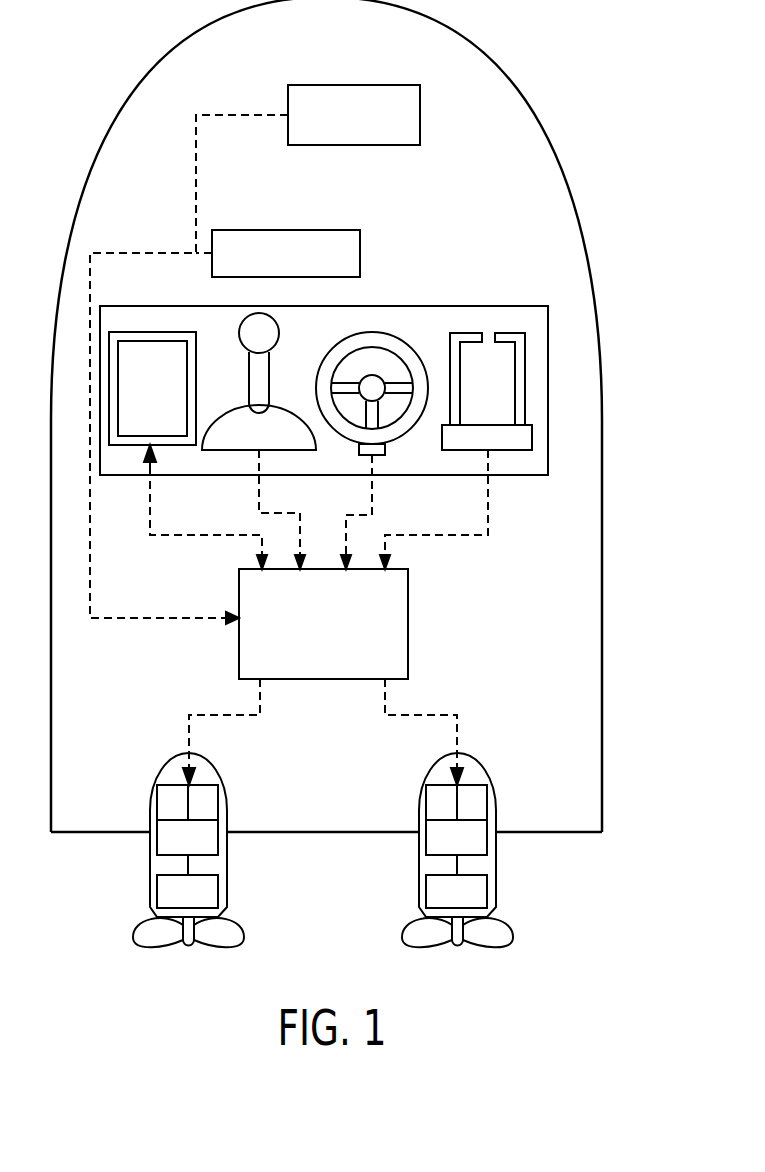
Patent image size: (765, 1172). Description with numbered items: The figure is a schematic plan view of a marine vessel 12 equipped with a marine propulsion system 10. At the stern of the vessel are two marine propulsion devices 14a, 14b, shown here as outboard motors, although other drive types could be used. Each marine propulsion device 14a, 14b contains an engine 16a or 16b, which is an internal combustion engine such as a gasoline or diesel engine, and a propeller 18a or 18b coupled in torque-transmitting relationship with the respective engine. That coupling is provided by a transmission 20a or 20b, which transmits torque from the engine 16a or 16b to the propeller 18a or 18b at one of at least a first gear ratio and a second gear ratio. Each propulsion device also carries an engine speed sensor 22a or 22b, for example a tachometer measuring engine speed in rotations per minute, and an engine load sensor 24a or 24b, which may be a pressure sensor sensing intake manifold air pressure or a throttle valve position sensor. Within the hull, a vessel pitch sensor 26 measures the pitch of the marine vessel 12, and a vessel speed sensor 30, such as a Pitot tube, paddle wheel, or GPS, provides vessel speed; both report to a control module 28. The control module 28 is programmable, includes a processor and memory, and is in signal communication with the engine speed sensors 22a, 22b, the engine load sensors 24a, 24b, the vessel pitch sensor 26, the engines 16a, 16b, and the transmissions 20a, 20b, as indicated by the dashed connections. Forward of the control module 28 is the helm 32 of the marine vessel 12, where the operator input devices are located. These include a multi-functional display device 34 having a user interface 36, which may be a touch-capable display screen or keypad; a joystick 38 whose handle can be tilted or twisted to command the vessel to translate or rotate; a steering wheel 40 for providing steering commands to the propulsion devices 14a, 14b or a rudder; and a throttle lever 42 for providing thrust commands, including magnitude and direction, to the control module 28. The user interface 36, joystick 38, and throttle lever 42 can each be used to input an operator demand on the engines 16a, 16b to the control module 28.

The marine propulsion system 10 is at (430, 586).
The marine vessel 12 is at (530, 128).
The marine propulsion device 14a is at (181, 850).
The marine propulsion device 14b is at (470, 858).
The engine 16a is at (160, 833).
The engine 16b is at (478, 843).
The propeller 18a is at (140, 935).
The propeller 18b is at (505, 935).
The transmission 20a is at (157, 897).
The transmission 20b is at (490, 890).
The engine speed sensor 22a is at (157, 808).
The engine speed sensor 22b is at (427, 795).
The engine load sensor 24a is at (212, 803).
The engine load sensor 24b is at (483, 800).
The vessel pitch sensor 26 is at (344, 230).
The control module 28 is at (408, 635).
The vessel speed sensor 30 is at (344, 85).
The helm 32 is at (478, 306).
The multi-functional display device 34 is at (177, 369).
The user interface 36 is at (196, 381).
The joystick 38 is at (272, 372).
The steering wheel 40 is at (390, 333).
The throttle lever 42 is at (528, 353).